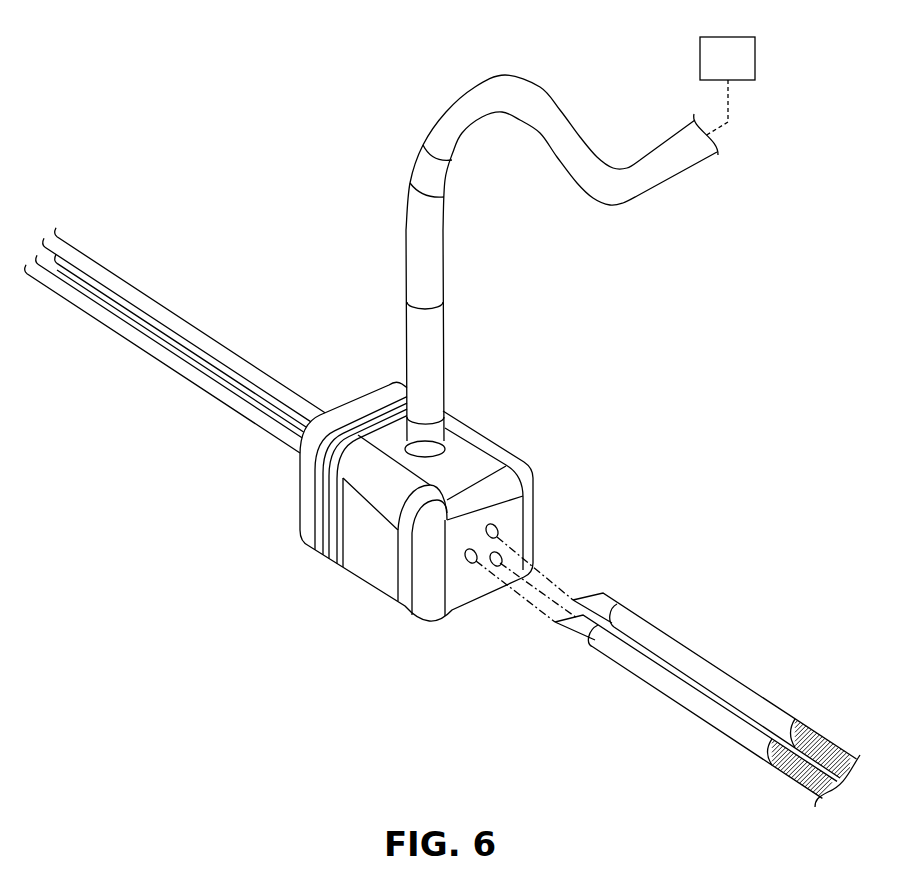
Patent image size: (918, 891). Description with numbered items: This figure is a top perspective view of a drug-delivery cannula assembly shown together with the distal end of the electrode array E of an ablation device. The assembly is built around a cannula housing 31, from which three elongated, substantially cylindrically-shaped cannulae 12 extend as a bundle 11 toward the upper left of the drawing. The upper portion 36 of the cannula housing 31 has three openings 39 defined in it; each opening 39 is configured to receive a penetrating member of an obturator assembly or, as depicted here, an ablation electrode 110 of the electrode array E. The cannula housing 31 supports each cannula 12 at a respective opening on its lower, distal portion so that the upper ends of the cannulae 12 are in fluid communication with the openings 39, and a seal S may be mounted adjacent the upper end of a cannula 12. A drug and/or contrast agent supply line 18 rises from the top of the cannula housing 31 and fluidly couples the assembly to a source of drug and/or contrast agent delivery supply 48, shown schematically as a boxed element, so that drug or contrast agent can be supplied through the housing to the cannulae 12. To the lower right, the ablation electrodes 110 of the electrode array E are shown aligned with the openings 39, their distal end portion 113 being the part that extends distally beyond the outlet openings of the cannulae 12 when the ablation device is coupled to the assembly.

The cable bundle 11 is at (217, 342).
The cannulae 12 is at (160, 306).
The drug and/or contrast agent supply line 18 is at (515, 84).
The cannula housing 31 is at (503, 431).
The upper portion 36 is at (460, 583).
The openings 39 is at (497, 530).
The drug and/or contrast agent delivery supply 48 is at (740, 70).
The ablation electrodes 110 is at (693, 746).
The distal end portion 113 is at (663, 683).
The seal S is at (470, 560).
The electrode array E is at (729, 656).